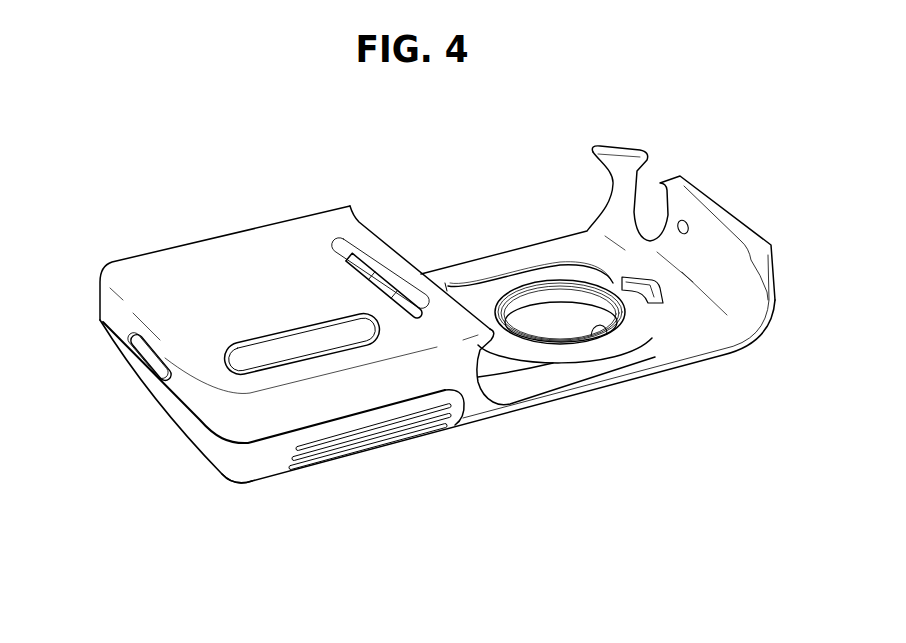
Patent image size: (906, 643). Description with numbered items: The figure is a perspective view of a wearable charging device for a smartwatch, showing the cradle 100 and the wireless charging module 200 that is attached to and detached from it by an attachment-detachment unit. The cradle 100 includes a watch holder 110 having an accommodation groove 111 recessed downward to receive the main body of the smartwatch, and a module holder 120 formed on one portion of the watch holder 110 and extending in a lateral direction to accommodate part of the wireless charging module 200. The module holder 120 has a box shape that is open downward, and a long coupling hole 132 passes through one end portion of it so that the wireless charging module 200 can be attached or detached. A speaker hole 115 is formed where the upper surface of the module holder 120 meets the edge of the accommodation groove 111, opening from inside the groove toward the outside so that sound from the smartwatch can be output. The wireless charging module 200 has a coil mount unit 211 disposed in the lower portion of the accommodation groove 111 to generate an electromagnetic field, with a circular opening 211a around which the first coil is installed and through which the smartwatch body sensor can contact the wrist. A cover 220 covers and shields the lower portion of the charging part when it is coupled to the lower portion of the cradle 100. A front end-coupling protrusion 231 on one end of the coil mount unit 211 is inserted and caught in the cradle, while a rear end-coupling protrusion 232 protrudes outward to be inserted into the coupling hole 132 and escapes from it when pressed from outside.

The cradle 100 is at (288, 194).
The watch holder 110 is at (708, 208).
The accommodation groove 111 is at (580, 240).
The speaker hole 115 is at (362, 263).
The module holder 120 is at (195, 252).
The coupling hole 132 is at (131, 336).
The wireless charging module 200 is at (154, 427).
The coil mount unit 211 is at (550, 355).
The opening 211a is at (612, 334).
The cover 220 is at (238, 466).
The front end-coupling protrusion 231 is at (660, 307).
The rear end-coupling protrusion 232 is at (143, 353).